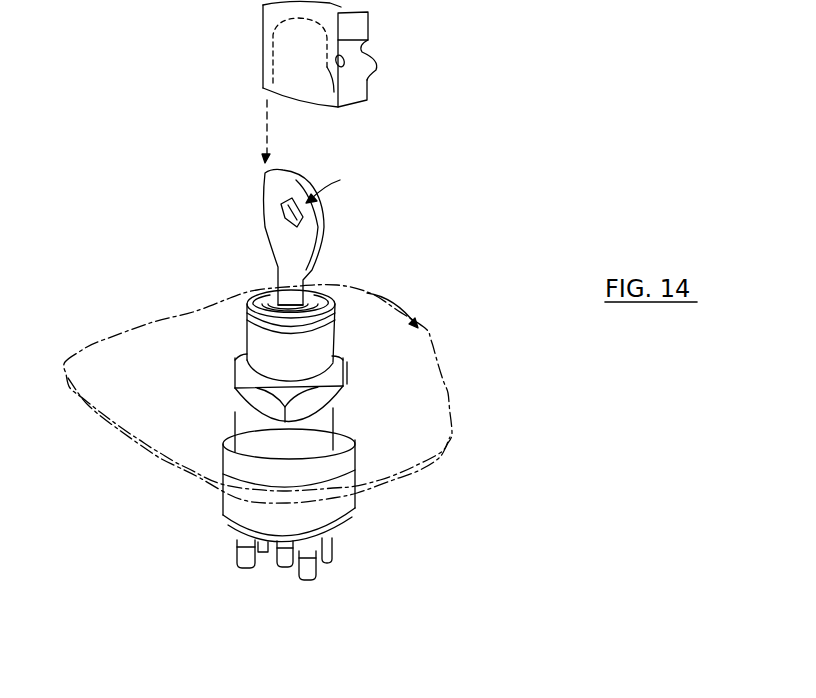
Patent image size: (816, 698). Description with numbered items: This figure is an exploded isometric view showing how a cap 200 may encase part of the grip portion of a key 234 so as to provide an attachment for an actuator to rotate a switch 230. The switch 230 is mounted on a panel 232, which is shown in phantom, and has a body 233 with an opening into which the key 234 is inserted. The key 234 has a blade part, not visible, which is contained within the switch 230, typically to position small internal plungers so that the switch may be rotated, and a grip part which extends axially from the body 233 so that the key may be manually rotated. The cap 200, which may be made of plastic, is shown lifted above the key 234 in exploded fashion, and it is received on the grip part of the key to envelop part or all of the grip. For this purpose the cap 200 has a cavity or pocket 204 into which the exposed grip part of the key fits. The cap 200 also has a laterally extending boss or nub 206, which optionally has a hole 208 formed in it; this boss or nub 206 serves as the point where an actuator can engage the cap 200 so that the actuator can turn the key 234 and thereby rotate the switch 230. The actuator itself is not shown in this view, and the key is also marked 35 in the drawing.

The cap 200 is at (375, 24).
The cavity or pocket 204 is at (300, 90).
The laterally extending boss or nub 206 is at (364, 66).
The hole 208 is at (339, 67).
The key 35 is at (283, 192).
The key 234 is at (261, 230).
The body 233 is at (263, 358).
The panel 232 is at (395, 403).
The switch 230 is at (353, 510).